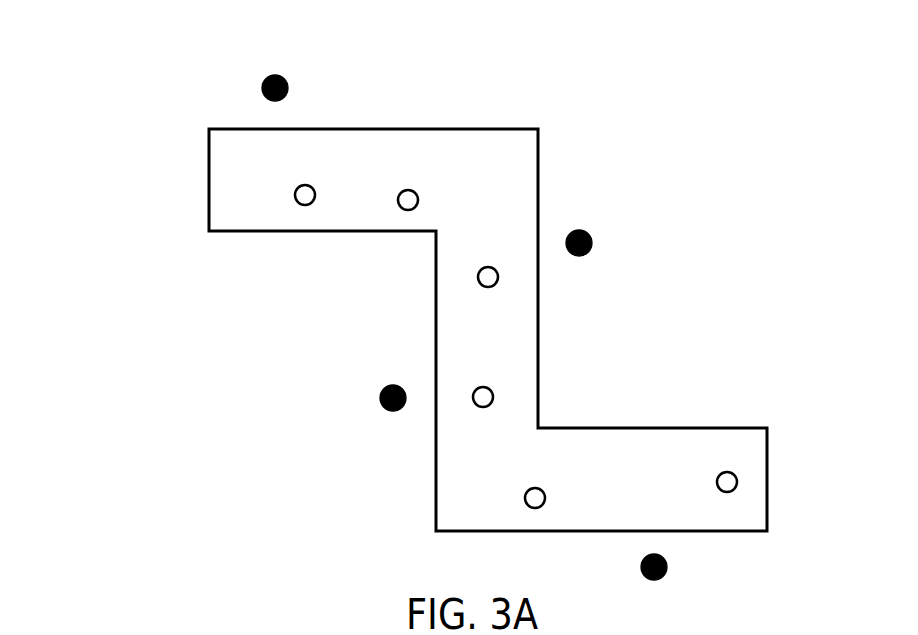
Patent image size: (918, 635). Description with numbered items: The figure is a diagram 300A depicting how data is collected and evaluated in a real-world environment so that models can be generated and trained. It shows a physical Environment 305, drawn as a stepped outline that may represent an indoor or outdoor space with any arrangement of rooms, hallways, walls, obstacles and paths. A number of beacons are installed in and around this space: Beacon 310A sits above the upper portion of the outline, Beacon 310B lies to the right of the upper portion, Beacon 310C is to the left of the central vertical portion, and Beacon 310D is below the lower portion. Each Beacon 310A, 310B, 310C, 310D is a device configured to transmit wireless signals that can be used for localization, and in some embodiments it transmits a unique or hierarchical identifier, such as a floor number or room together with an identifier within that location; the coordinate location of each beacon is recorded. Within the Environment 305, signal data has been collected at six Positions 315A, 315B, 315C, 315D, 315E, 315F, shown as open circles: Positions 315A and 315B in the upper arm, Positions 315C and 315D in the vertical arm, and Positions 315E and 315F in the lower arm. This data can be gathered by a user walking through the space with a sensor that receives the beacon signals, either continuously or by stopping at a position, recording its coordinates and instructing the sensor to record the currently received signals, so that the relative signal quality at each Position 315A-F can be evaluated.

The diagram 300A is at (156, 46).
The Environment 305 is at (538, 143).
The Beacon 310A is at (288, 88).
The Beacon 310B is at (592, 241).
The Beacon 310C is at (380, 395).
The Beacon 310D is at (667, 569).
The Position 315A is at (315, 192).
The Position 315B is at (418, 197).
The Position 315C is at (488, 287).
The Position 315D is at (483, 407).
The Position 315E is at (545, 495).
The Position 315F is at (737, 485).